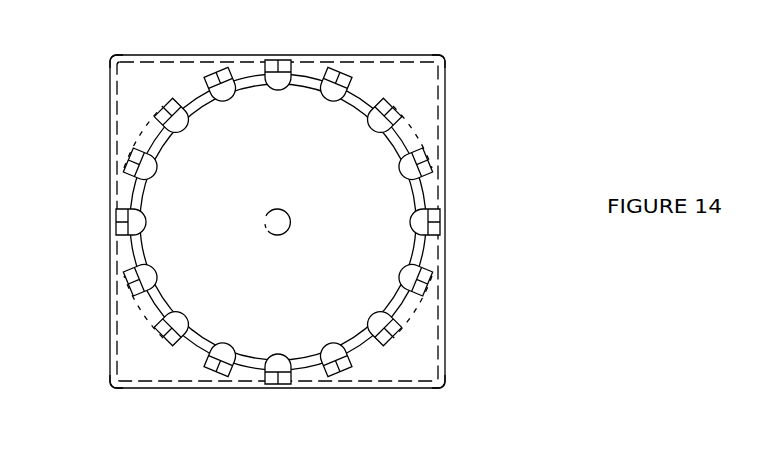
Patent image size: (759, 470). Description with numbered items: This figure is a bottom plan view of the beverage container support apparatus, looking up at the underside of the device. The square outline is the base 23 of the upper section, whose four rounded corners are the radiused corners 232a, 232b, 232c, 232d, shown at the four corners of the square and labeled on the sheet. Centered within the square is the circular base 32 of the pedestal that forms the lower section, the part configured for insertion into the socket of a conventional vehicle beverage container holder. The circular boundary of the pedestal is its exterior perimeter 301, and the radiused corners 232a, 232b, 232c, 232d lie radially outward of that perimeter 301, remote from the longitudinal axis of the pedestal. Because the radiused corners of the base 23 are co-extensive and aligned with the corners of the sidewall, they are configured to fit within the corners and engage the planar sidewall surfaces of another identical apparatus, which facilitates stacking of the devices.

The base 23 is at (424, 100).
The base 32 is at (297, 295).
The exterior perimeter 301 is at (430, 312).
The radiused corner 232a is at (446, 57).
The radiused corner 232b is at (111, 57).
The radiused corner 232c is at (111, 388).
The radiused corner 232d is at (446, 389).